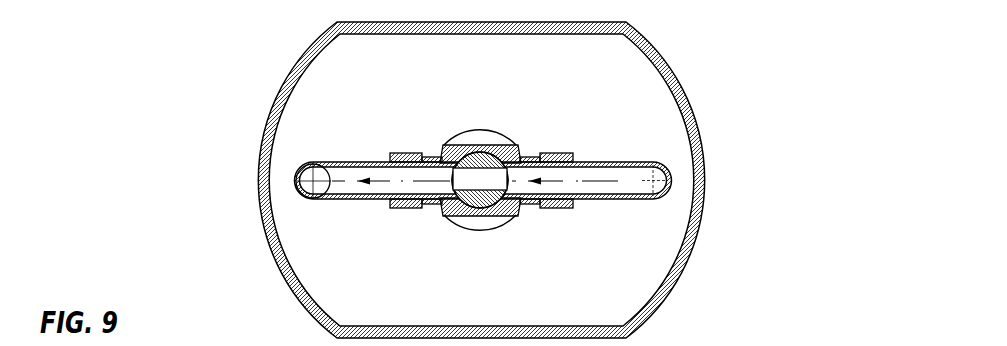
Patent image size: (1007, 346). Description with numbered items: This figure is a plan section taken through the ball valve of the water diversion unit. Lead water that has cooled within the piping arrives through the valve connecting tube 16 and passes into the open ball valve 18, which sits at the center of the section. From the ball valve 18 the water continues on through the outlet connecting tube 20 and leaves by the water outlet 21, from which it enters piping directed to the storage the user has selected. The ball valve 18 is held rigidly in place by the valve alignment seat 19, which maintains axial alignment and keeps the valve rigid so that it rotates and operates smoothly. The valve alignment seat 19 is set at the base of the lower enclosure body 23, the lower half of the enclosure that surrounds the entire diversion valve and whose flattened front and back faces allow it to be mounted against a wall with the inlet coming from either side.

The valve connecting tube 16 is at (650, 157).
The ball valve 18 is at (451, 142).
The valve alignment seat 19 is at (478, 231).
The outlet connecting tube 20 is at (352, 158).
The water outlet 21 is at (309, 162).
The lower enclosure body 23 is at (670, 52).